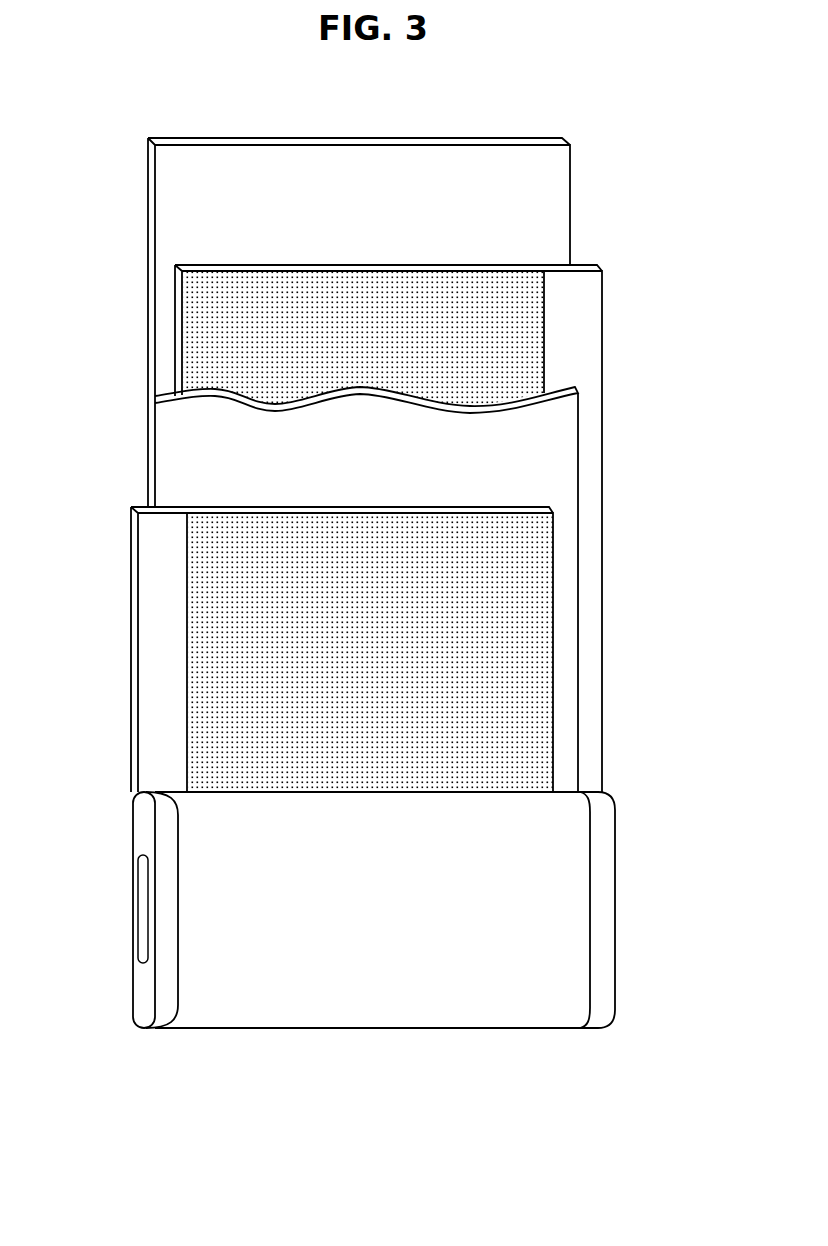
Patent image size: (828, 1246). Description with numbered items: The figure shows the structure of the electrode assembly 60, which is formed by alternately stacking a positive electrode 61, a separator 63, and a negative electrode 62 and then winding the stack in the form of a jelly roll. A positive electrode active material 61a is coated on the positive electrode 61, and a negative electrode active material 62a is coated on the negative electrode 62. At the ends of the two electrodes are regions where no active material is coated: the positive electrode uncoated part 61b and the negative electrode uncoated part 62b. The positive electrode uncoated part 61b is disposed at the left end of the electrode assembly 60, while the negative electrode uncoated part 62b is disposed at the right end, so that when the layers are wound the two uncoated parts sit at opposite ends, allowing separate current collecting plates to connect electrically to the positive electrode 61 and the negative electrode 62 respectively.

The electrode assembly 60 is at (380, 993).
The positive electrode 61 is at (354, 649).
The positive electrode active material 61a is at (534, 665).
The positive electrode uncoated part 61b is at (153, 706).
The negative electrode 62 is at (366, 528).
The negative electrode active material 62a is at (183, 318).
The negative electrode uncoated part 62b is at (588, 340).
The separator 63 is at (146, 216).